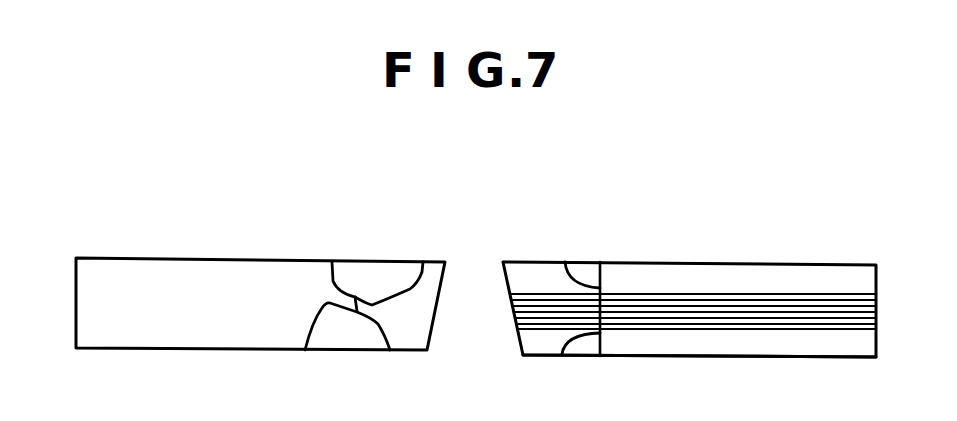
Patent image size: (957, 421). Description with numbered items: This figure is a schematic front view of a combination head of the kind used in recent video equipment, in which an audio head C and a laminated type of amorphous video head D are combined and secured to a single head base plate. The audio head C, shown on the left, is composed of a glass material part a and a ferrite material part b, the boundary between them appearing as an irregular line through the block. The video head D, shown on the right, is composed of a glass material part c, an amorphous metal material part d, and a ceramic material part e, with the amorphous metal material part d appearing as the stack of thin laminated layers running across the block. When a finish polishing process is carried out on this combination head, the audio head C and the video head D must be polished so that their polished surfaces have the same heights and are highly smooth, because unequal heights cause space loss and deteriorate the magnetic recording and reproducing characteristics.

The glass material part a is at (378, 275).
The ferrite material part b is at (411, 333).
The glass material part c is at (585, 275).
The amorphous metal material part d is at (642, 323).
The ceramic material part e is at (724, 346).
The audio head C is at (252, 258).
The video head D is at (734, 263).